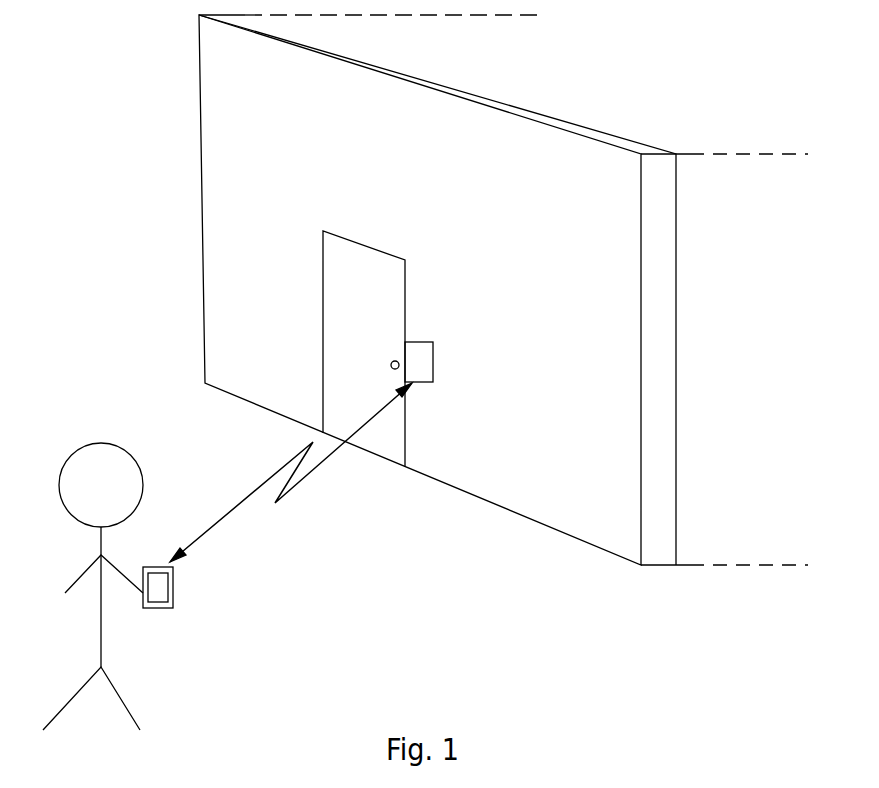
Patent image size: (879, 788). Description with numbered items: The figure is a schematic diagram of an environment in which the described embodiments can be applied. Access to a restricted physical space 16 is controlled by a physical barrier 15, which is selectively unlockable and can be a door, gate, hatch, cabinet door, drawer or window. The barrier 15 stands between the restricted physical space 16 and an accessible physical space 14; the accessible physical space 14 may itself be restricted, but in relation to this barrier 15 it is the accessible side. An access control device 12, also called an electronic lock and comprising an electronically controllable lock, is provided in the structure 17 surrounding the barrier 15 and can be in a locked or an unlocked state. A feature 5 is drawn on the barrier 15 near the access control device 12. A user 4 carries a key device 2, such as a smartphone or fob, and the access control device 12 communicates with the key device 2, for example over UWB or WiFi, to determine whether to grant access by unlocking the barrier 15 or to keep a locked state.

The key device 2 is at (173, 585).
The user 4 is at (81, 443).
The door lock 5 is at (395, 361).
The access control device 12 is at (433, 350).
The accessible physical space 14 is at (111, 204).
The physical barrier 15 is at (377, 312).
The physical space 16 is at (585, 77).
The structure 17 is at (270, 264).